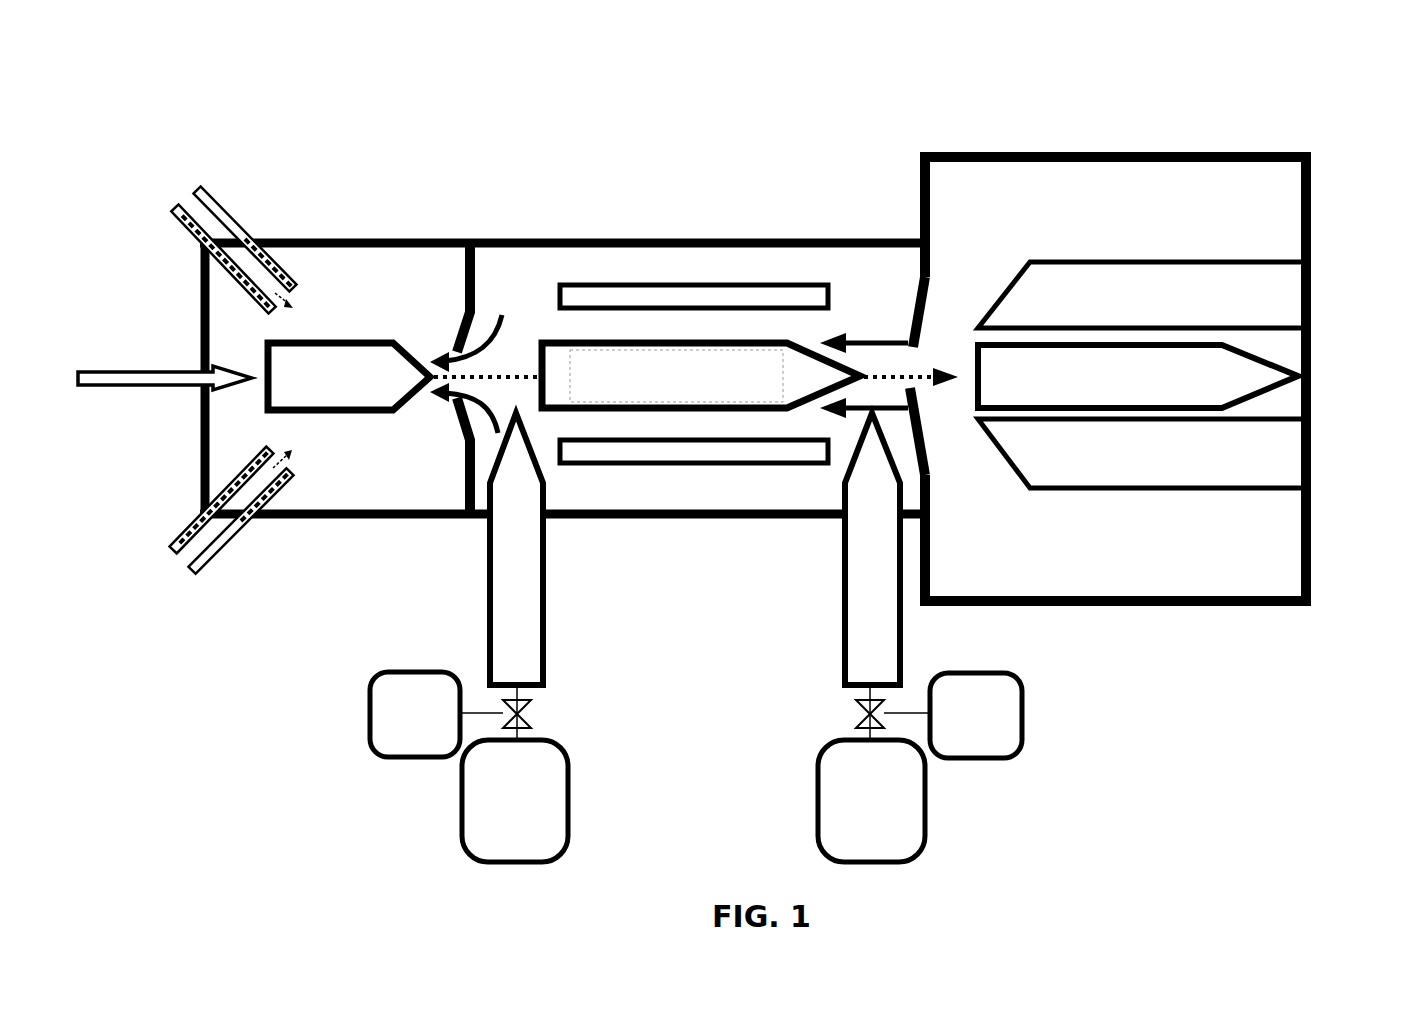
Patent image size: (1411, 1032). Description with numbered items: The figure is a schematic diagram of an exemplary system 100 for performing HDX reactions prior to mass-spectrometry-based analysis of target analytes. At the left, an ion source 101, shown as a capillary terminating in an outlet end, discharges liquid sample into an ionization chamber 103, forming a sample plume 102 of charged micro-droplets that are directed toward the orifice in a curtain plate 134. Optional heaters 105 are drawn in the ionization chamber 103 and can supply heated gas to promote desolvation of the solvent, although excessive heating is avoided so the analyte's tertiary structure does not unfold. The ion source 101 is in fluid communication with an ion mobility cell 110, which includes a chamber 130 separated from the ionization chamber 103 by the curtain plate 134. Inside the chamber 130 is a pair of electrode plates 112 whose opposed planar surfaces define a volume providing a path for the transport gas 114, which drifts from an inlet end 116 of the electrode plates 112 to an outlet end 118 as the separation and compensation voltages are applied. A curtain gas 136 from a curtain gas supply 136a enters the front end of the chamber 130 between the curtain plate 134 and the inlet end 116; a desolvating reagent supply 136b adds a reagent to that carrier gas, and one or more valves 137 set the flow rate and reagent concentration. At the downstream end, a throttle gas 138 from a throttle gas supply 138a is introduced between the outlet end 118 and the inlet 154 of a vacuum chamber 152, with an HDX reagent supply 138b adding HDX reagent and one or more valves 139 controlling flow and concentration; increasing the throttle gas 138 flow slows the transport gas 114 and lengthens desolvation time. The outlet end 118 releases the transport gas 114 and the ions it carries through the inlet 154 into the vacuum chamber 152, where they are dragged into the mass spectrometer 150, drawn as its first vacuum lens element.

The system 100 is at (478, 128).
The ion source 101 is at (120, 387).
The sample plume 102 is at (332, 412).
The ionization chamber 103 is at (456, 505).
The heaters 105 is at (232, 215).
The ion mobility cell 110 is at (690, 535).
The electrode plates 112 is at (666, 284).
The transport gas 114 is at (753, 342).
The inlet end 116 is at (527, 328).
The outlet end 118 is at (866, 322).
The chamber 130 is at (606, 505).
The curtain plate 134 is at (455, 327).
The curtain gas 136 is at (490, 558).
The curtain gas supply 136a is at (515, 801).
The desolvating reagent supply 136b is at (436, 714).
The valves 137 is at (530, 712).
The throttle gas 138 is at (845, 558).
The throttle gas supply 138a is at (871, 801).
The HDX reagent supply 138b is at (953, 715).
The valves 139 is at (860, 712).
The mass spectrometer 150 is at (1272, 309).
The vacuum chamber 152 is at (1298, 205).
The inlet 154 is at (922, 342).